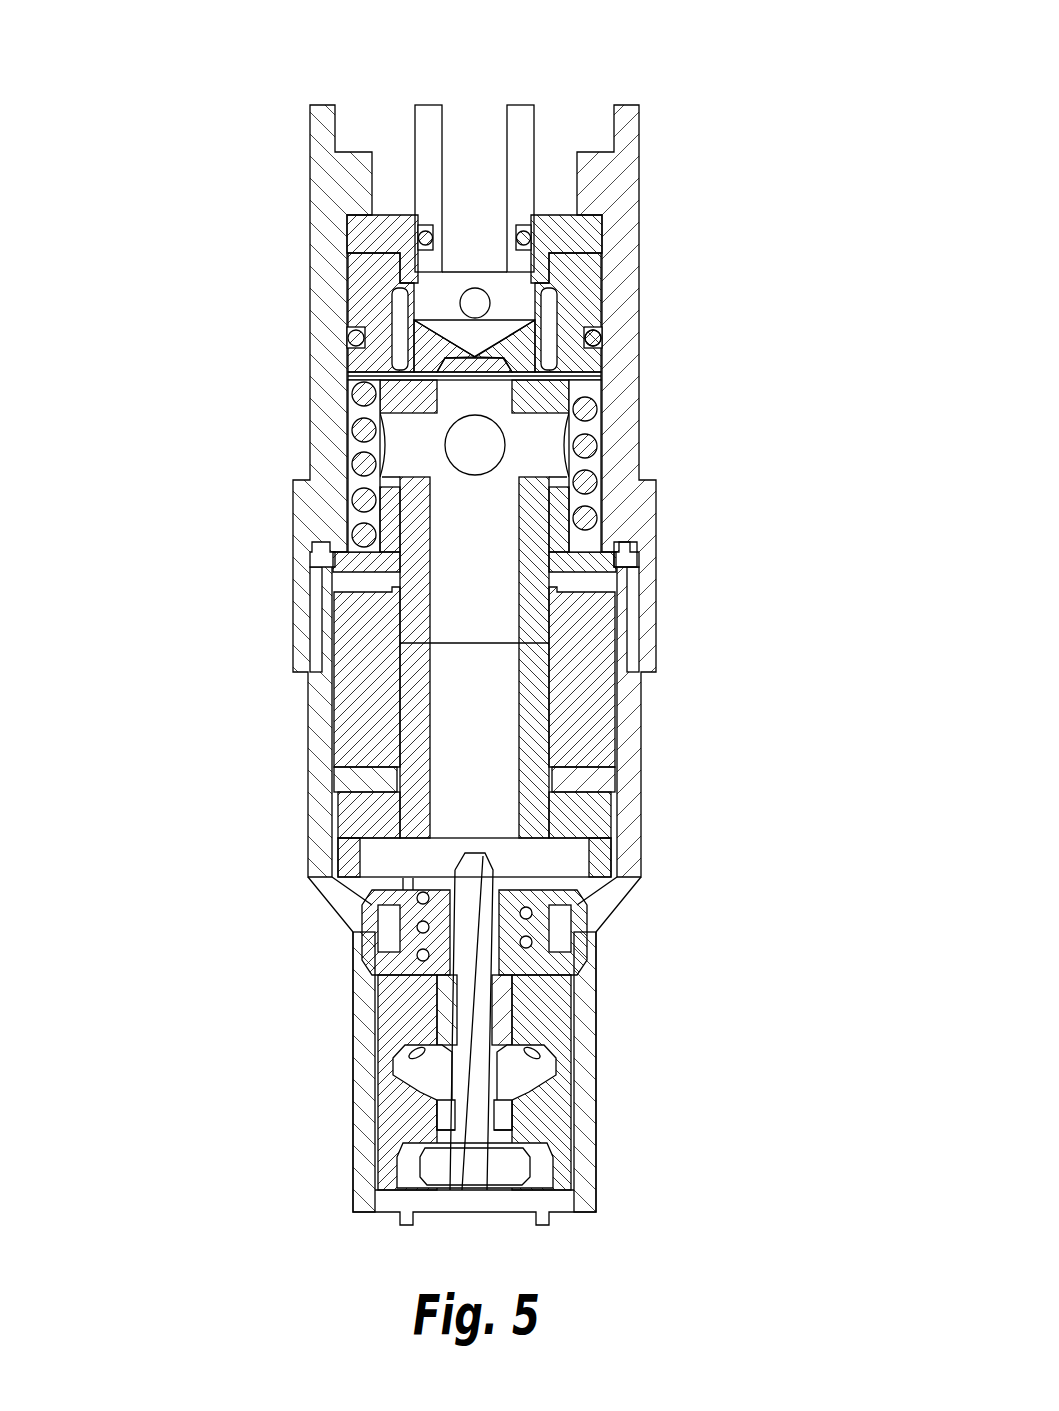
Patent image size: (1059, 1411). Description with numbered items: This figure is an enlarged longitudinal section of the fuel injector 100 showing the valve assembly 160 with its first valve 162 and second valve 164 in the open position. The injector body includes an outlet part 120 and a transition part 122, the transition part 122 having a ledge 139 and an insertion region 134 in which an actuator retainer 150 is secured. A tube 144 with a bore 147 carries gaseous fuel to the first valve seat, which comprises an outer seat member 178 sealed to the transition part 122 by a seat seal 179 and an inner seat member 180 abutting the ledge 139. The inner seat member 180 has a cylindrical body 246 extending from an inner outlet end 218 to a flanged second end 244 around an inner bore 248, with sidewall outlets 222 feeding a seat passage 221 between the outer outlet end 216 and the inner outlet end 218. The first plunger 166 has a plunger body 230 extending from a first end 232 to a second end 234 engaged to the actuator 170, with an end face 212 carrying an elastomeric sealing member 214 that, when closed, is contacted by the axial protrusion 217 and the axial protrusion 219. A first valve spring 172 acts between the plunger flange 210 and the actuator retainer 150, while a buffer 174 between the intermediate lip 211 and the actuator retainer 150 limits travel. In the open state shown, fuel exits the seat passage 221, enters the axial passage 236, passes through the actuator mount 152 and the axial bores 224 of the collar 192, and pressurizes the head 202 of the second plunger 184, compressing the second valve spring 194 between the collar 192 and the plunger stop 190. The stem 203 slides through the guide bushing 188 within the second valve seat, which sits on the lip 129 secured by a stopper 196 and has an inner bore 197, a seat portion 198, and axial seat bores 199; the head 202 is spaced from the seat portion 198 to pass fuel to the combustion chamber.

The fuel injector 100 is at (742, 114).
The outlet part 120 is at (300, 735).
The transition part 122 is at (642, 338).
The lip 129 is at (388, 1195).
The insertion region 134 is at (655, 578).
The ledge 139 is at (603, 160).
The tube 144 is at (533, 118).
The bore 147 is at (474, 160).
The actuator retainer 150 is at (532, 572).
The actuator mount 152 is at (530, 788).
The valve assembly 160 is at (212, 781).
The first valve 162 is at (232, 458).
The second valve 164 is at (305, 1020).
The first plunger 166 is at (413, 590).
The actuator 170 is at (590, 715).
The first valve spring 172 is at (596, 447).
The buffer 174 is at (608, 534).
The outer seat member 178 is at (588, 265).
The seat seal 179 is at (545, 325).
The inner seat member 180 is at (554, 233).
The second plunger 184 is at (500, 1087).
The guide bushing 188 is at (430, 1022).
The plunger stop 190 is at (400, 978).
The collar 192 is at (600, 867).
The second valve spring 194 is at (597, 933).
The stopper 196 is at (580, 945).
The inner bore 197 is at (435, 1080).
The seat portion 198 is at (533, 1130).
The axial seat bores 199 is at (520, 1072).
The head 202 is at (452, 1157).
The stem 203 is at (478, 1048).
The plunger flange 210 is at (600, 380).
The intermediate lip 211 is at (465, 518).
The end face 212 is at (348, 372).
The sealing member 214 is at (400, 348).
The outer outlet end 216 is at (600, 374).
The axial protrusion 217 is at (600, 384).
The inner outlet end 218 is at (480, 290).
The axial protrusion 219 is at (352, 335).
The seat passage 221 is at (592, 333).
The sidewall outlets 222 is at (400, 300).
The axial bores 224 is at (395, 888).
The plunger body 230 is at (620, 560).
The first end 232 is at (356, 392).
The second end 234 is at (540, 630).
The axial passage 236 is at (348, 550).
The flanged second end 244 is at (355, 258).
The cylindrical body 246 is at (365, 250).
The inner bore 248 is at (425, 232).